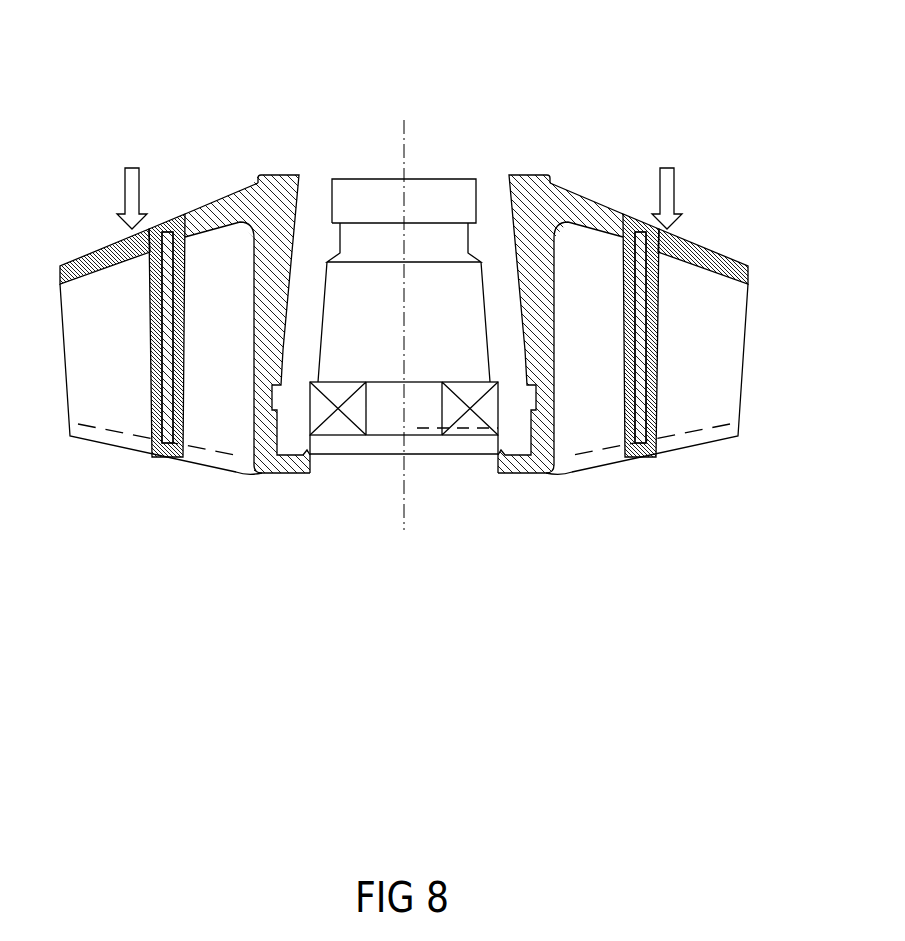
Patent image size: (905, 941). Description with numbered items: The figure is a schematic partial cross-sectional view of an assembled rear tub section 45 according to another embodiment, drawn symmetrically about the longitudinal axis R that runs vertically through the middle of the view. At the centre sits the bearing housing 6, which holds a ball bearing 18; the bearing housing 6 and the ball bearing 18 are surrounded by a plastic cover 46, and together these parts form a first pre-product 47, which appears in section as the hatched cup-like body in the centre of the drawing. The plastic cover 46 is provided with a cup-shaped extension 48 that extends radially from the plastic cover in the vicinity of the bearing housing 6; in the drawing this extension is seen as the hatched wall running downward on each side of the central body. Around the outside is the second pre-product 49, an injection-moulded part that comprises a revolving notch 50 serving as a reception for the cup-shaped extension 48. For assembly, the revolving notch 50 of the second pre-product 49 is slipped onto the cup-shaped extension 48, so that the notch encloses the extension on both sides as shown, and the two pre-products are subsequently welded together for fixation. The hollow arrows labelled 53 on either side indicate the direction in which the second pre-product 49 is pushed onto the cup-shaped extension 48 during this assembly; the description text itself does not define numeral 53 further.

The rear tub section 45 is at (694, 88).
The first pre-product 47 is at (320, 152).
The plastic cover 46 is at (536, 174).
The second pre-product 49 is at (107, 250).
The revolving notch 50 is at (184, 388).
The cup-shaped extension 48 is at (168, 281).
The load direction arrow 53 is at (139, 178).
The bearing housing 6 is at (484, 179).
The ball bearing 18 is at (338, 428).
The longitudinal axis R is at (386, 539).